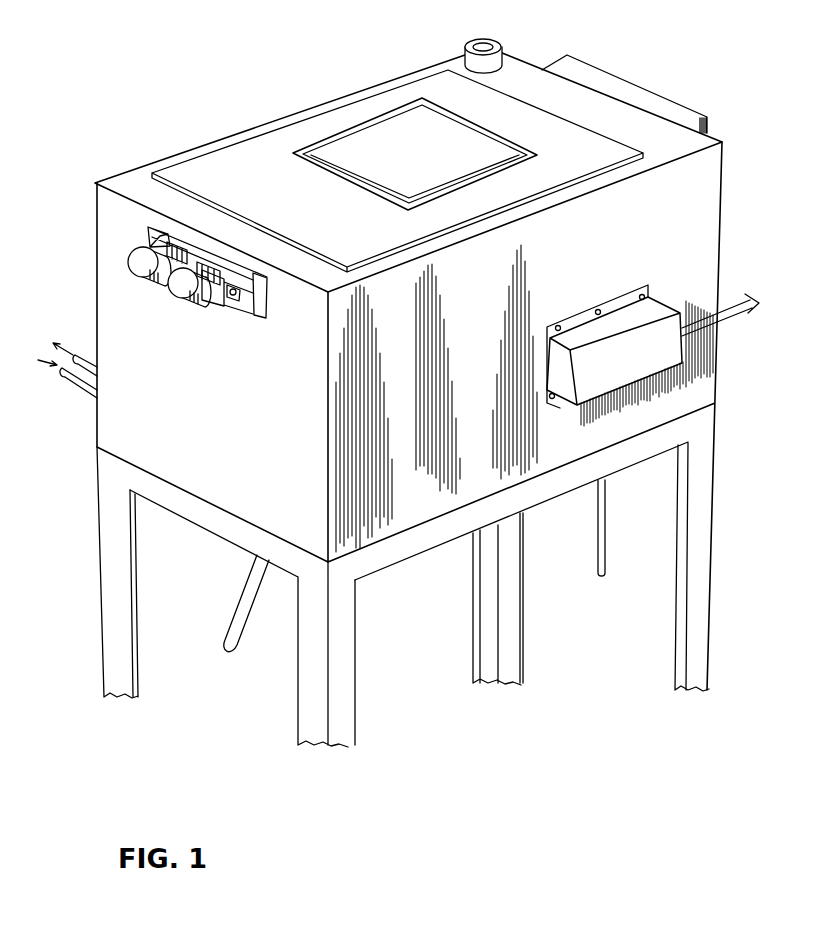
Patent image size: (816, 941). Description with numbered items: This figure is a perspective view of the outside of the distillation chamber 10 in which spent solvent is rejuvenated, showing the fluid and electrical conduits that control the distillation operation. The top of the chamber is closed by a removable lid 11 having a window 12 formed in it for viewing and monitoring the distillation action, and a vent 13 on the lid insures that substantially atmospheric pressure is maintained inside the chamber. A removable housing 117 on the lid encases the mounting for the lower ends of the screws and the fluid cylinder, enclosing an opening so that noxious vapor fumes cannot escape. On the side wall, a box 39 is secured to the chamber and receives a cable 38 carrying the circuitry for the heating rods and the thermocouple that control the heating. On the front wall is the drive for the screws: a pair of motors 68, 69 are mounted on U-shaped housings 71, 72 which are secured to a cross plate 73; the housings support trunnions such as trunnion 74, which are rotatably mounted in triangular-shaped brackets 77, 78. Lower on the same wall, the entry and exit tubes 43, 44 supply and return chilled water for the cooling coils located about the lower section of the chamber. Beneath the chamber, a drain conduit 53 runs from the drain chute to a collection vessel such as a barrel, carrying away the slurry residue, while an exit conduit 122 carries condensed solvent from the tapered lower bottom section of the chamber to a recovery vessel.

The chamber 10 is at (725, 168).
The removable lid 11 is at (272, 138).
The window 12 is at (405, 123).
The vent 13 is at (494, 36).
The removable housing 117 is at (673, 97).
The cable 38 is at (735, 302).
The box 39 is at (667, 347).
The triangular-shaped bracket 78 is at (146, 226).
The motor 69 is at (124, 258).
The U-shaped housing 72 is at (165, 270).
The motor 68 is at (168, 293).
The U-shaped housing 71 is at (205, 302).
The cross plate 73 is at (197, 258).
The trunnion 74 is at (231, 296).
The triangular-shaped bracket 77 is at (247, 305).
The exit tube 44 is at (72, 378).
The entry tube 43 is at (84, 388).
The drain conduit 53 is at (228, 621).
The exit conduit 122 is at (597, 570).